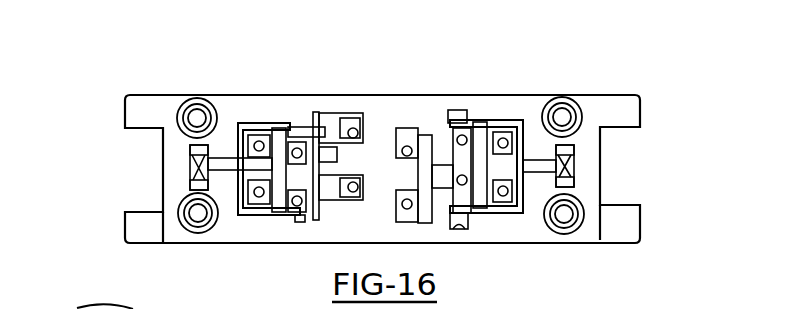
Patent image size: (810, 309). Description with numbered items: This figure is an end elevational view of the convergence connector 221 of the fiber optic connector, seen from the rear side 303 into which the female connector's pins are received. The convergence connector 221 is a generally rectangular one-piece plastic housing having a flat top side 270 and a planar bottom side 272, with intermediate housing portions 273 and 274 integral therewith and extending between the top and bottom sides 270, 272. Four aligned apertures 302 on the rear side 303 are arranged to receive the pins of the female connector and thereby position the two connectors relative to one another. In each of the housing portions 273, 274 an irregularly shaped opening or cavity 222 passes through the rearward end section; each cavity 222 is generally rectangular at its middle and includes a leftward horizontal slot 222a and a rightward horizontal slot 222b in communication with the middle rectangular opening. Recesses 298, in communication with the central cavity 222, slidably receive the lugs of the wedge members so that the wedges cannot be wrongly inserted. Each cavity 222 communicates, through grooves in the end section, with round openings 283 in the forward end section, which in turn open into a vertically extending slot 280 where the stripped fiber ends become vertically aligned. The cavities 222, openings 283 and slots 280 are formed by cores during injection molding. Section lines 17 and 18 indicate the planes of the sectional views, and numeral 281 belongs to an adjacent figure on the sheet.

The top side 270 is at (147, 95).
The apertures 302 is at (197, 98).
The leftward horizontal extending slot 222a is at (190, 155).
The round openings 283 is at (192, 165).
The openings 222 is at (275, 118).
The slots 280 is at (290, 118).
The recesses 298 is at (317, 118).
The rightward horizontal extending slot 222b is at (428, 148).
The convergence connector 221 is at (444, 85).
The intermediate housing portion 273 is at (230, 212).
The intermediate housing portion 274 is at (600, 130).
The bottom side 272 is at (600, 243).
The rear side 303 is at (147, 228).
The section line 18 is at (120, 170).
The section line 17 is at (155, 203).
The adjacent figure numeral (partial) 281 is at (76, 305).